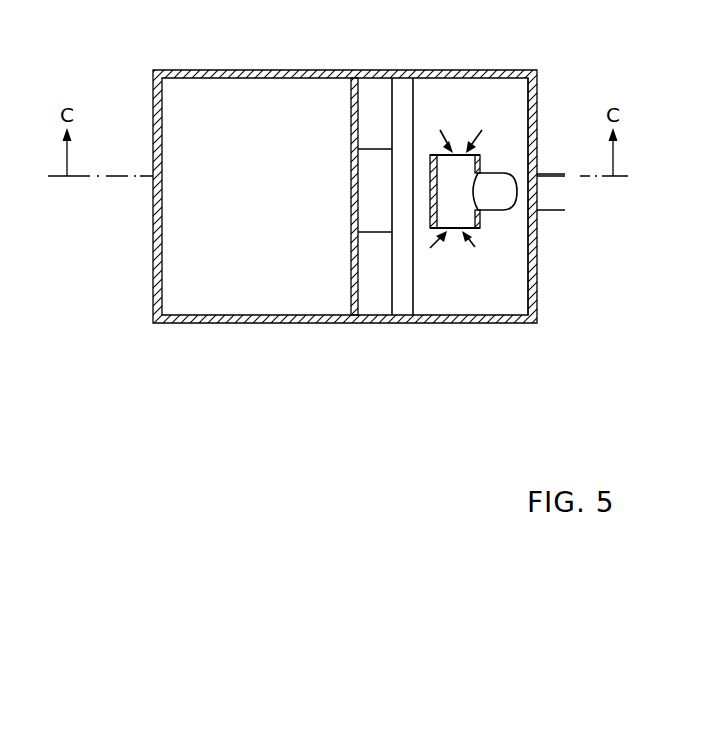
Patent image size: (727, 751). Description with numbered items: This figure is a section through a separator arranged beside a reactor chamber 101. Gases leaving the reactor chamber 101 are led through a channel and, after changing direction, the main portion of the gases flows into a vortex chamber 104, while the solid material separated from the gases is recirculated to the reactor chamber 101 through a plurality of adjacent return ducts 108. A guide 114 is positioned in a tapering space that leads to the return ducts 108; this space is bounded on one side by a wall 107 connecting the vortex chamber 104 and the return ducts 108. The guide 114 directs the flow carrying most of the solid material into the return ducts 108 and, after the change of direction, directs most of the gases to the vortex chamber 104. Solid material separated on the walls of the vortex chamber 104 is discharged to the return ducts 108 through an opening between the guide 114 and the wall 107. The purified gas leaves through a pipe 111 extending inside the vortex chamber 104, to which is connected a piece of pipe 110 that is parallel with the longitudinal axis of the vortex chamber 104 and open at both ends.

The reactor chamber 101 is at (237, 293).
The vortex chamber 104 is at (505, 93).
The wall 107 is at (480, 124).
The return ducts 108 is at (362, 182).
The piece of pipe 110 is at (457, 215).
The pipe 111 is at (497, 198).
The guide 114 is at (403, 98).